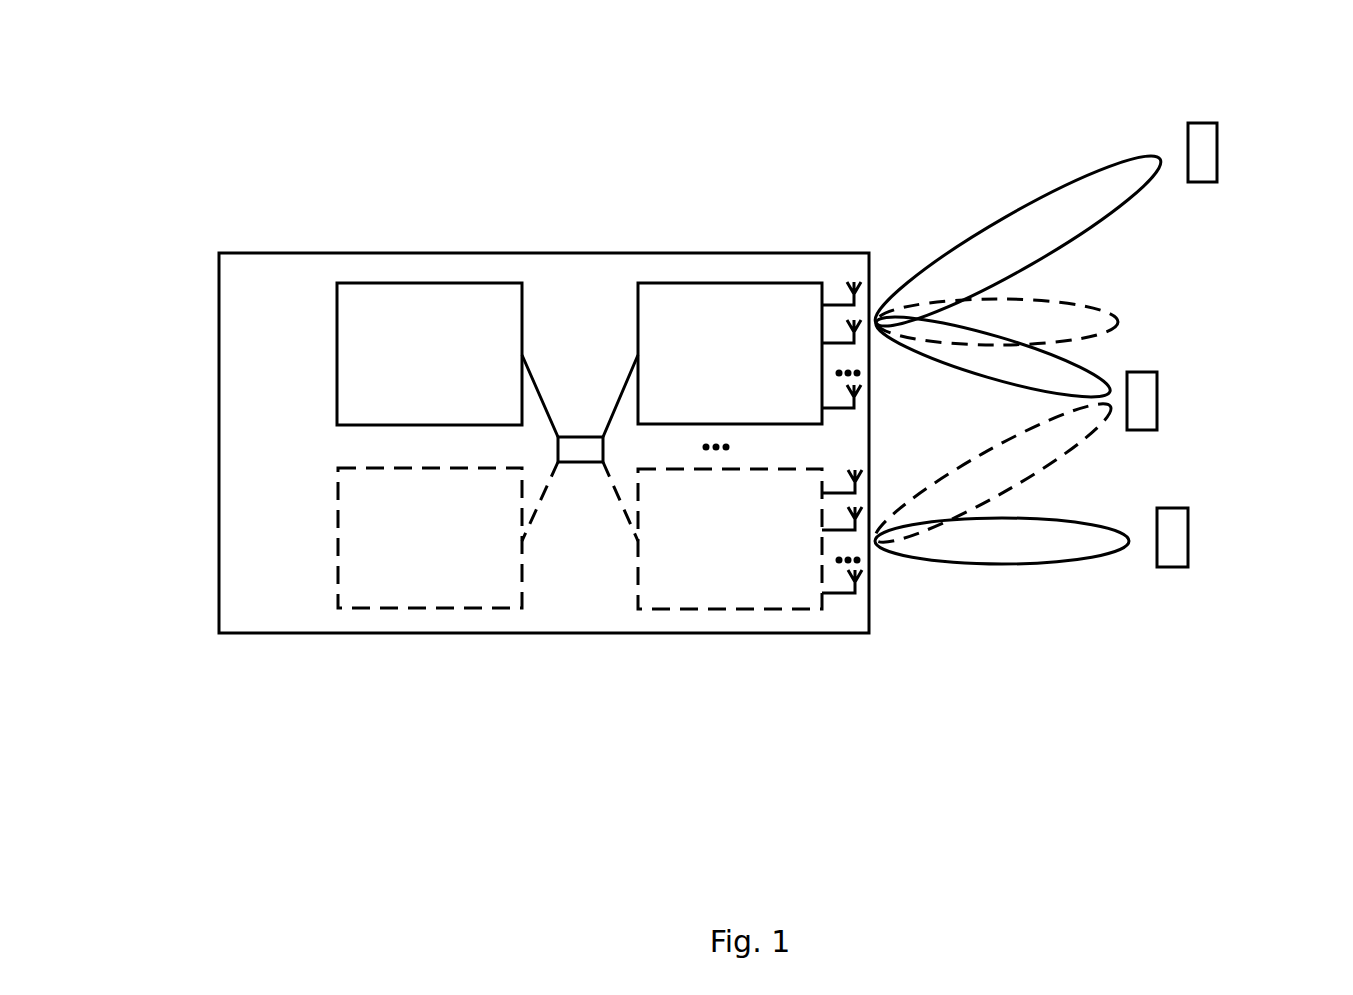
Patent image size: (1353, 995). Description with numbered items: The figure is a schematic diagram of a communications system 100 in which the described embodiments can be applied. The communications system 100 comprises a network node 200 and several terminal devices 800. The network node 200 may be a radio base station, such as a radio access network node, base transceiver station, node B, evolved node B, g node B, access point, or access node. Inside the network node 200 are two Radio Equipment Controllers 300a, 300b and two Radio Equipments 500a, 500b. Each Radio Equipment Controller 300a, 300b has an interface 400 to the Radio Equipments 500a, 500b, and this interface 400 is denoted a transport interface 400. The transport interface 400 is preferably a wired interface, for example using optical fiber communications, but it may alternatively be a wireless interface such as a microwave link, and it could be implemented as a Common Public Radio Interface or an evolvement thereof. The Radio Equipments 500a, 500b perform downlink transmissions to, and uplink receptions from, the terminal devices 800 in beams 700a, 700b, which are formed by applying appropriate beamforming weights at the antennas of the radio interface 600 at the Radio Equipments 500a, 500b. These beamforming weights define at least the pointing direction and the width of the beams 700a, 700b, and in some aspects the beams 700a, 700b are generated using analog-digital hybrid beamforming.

The communications system 100 is at (288, 73).
The network node 200 is at (219, 550).
The Radio Equipment Controller 300a is at (343, 295).
The Radio Equipment Controller 300b is at (344, 479).
The transport interface 400 is at (580, 436).
The Radio Equipment 500a is at (650, 294).
The Radio Equipment 500b is at (650, 576).
The radio interface 600 is at (830, 304).
The beam 700a is at (1001, 218).
The beam 700b is at (1113, 316).
The terminal device 800 is at (1217, 148).